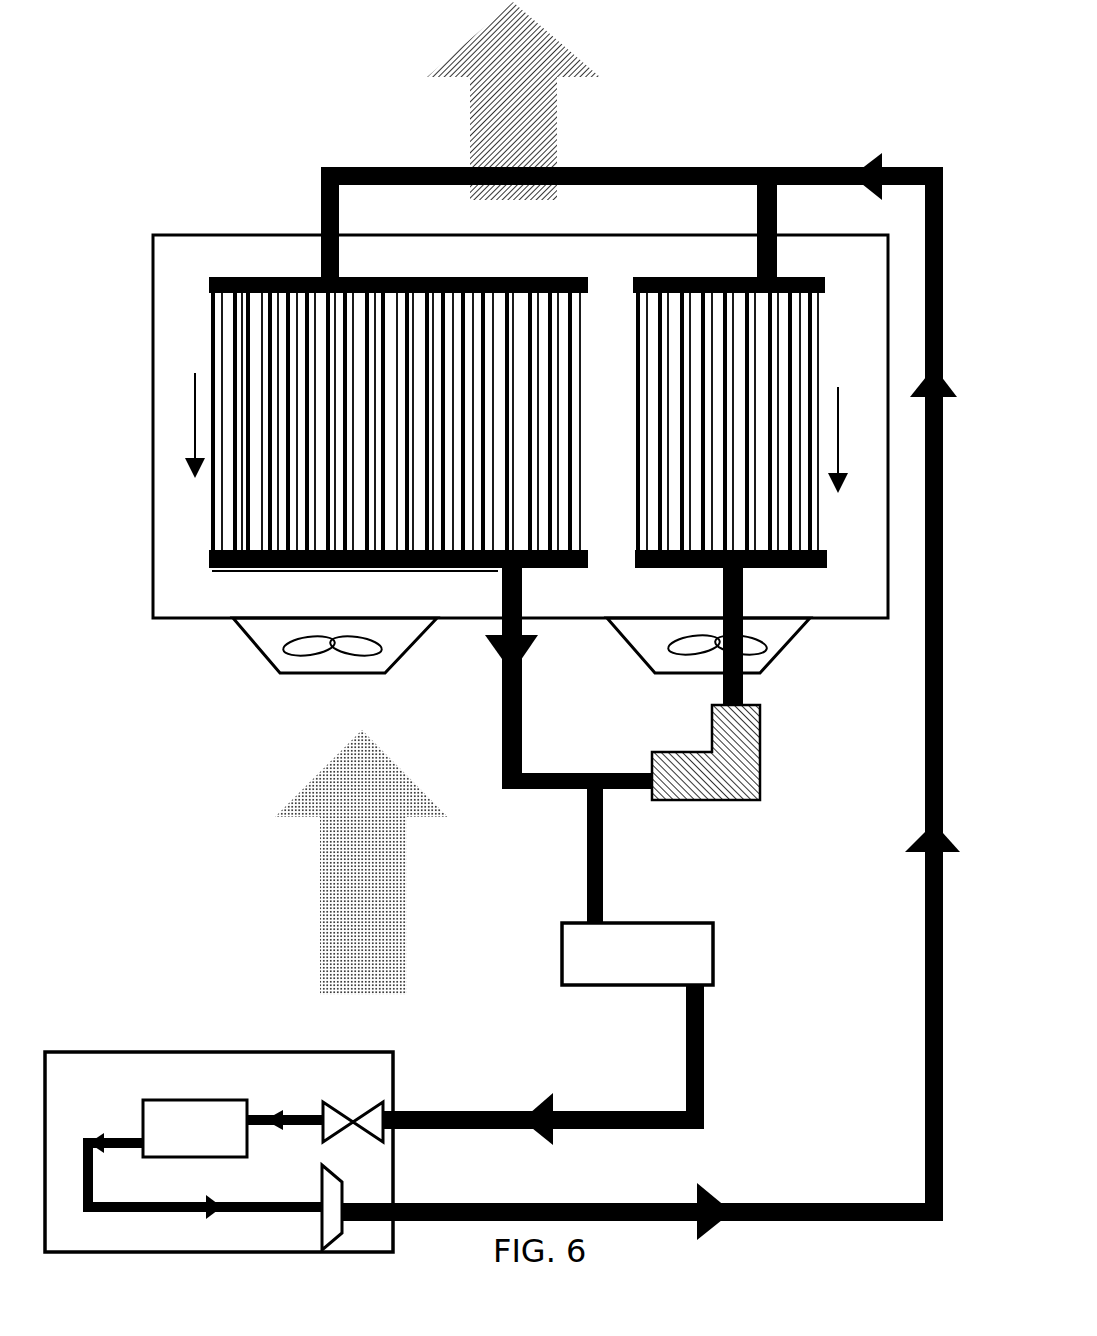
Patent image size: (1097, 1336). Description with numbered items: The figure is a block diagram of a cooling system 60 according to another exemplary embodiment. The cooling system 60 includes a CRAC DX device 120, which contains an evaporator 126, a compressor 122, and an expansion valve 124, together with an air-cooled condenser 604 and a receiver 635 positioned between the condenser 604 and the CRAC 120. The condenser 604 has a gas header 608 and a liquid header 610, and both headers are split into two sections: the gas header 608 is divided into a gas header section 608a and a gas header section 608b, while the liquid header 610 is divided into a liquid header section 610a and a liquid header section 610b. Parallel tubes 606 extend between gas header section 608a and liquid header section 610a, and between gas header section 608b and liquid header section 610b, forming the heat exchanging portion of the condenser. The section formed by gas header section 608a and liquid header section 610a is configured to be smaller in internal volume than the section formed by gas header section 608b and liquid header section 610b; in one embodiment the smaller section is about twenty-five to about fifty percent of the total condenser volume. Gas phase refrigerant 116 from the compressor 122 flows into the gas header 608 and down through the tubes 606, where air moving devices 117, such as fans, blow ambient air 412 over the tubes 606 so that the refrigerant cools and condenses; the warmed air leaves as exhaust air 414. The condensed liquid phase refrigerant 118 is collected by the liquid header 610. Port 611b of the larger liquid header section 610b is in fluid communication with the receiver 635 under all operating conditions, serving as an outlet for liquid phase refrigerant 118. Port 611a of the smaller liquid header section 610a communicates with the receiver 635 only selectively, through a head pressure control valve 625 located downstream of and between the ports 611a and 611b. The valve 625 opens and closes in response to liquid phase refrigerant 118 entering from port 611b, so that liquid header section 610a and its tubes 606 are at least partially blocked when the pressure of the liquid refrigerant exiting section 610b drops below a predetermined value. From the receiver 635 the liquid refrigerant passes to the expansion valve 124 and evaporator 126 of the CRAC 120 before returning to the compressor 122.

The cooling system 60 is at (212, 74).
The air-cooled condenser 604 is at (213, 235).
The exhaust air 414 is at (487, 70).
The ambient air 412 is at (328, 857).
The gas phase refrigerant 116 is at (852, 165).
The gas header 608 is at (213, 280).
The gas header section 608b is at (285, 275).
The gas header section 608a is at (681, 278).
The parallel tubes 606 is at (235, 372).
The liquid header 610 is at (193, 550).
The liquid header section 610b is at (213, 570).
The liquid header section 610a is at (780, 573).
The port 611b is at (500, 573).
The port 611a is at (720, 572).
The air moving devices 117 is at (278, 655).
The liquid phase refrigerant 118 is at (710, 703).
The head pressure control valve 625 is at (737, 785).
The receiver 635 is at (648, 922).
The CRAC DX device 120 is at (167, 1050).
The expansion valve 124 is at (320, 1108).
The evaporator 126 is at (155, 1118).
The compressor 122 is at (317, 1218).